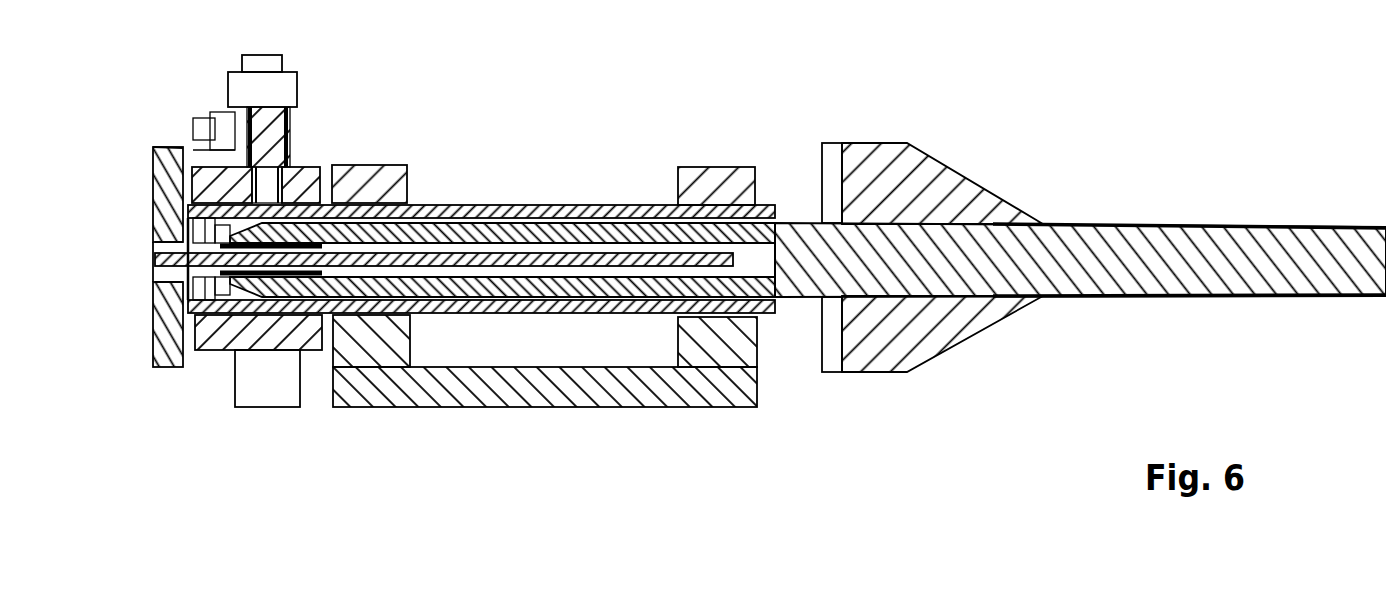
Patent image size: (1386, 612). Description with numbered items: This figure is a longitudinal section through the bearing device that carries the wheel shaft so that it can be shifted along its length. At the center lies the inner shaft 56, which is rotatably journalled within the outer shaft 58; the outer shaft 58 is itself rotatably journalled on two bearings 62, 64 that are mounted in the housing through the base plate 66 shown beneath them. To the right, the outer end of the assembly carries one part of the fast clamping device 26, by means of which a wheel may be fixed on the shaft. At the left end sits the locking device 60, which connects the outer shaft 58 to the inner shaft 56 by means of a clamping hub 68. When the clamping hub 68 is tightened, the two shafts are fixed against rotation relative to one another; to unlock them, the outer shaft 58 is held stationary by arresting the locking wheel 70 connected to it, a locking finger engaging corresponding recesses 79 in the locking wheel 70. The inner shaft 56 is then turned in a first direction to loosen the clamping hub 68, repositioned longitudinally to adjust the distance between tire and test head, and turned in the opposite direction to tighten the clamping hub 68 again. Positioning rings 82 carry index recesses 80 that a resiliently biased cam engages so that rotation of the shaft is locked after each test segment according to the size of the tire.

The fast clamping device part 26 is at (927, 180).
The inner shaft 56 is at (635, 232).
The outer shaft 58 is at (512, 212).
The locking device 60 is at (138, 263).
The bearing 62 is at (376, 180).
The bearing 64 is at (722, 178).
The base plate 66 is at (535, 395).
The clamping hub 68 is at (222, 318).
The locking wheel 70 is at (152, 174).
The recesses 79 is at (160, 147).
The index recesses 80 is at (308, 351).
The positioning rings 82 is at (237, 348).